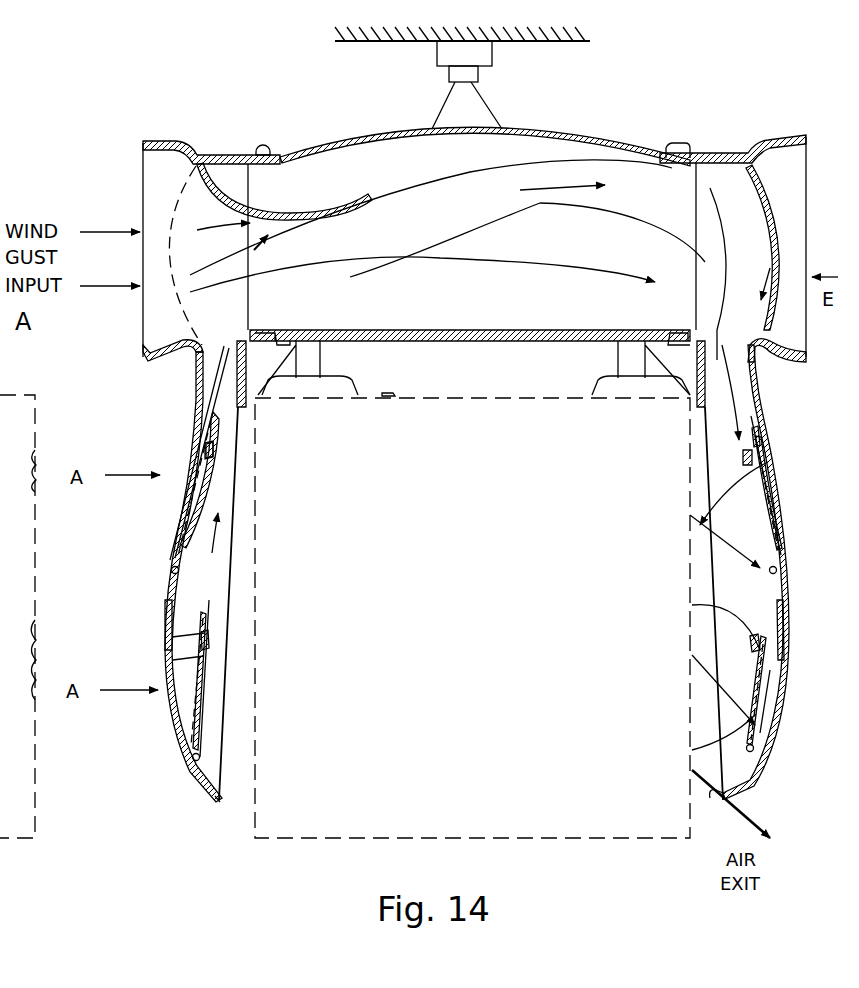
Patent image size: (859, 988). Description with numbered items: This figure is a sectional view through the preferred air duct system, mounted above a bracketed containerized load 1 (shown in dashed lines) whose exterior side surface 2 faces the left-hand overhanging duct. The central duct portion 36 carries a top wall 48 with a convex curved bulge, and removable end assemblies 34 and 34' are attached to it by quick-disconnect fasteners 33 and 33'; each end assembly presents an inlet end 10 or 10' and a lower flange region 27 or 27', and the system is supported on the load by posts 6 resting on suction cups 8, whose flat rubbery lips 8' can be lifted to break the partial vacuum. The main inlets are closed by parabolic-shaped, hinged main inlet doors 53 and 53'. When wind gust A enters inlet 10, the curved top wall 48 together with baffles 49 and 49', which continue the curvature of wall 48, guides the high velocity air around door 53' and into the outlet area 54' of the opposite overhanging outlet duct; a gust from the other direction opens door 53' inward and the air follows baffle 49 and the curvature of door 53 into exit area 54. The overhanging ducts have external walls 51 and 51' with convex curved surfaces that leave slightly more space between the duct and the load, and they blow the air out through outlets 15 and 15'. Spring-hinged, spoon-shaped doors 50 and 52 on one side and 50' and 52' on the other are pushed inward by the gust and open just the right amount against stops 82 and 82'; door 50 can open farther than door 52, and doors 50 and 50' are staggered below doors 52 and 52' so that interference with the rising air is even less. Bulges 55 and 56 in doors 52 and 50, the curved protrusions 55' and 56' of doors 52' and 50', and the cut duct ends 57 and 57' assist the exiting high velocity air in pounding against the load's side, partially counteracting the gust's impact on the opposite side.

The building structure 1 is at (498, 398).
The load side 2 is at (255, 570).
The support post 6 is at (322, 358).
The suction cup 8 is at (476, 378).
The lip 8' is at (394, 378).
The inlet end 10 is at (150, 250).
The inlet end 10' is at (779, 248).
The outlet 15 is at (252, 570).
The outlet 15' is at (690, 570).
The lower flange 27 is at (155, 341).
The lower flange 27' is at (796, 340).
The quick-disconnect fastener 33 is at (262, 126).
The quick-disconnect fastener 33' is at (678, 150).
The end assembly 34 is at (211, 137).
The end assembly 34' is at (733, 136).
The central duct portion 36 is at (505, 341).
The top wall 48 is at (385, 146).
The baffle 49 is at (263, 247).
The baffle 49' is at (678, 246).
The door 50 is at (155, 636).
The door 50' is at (804, 631).
The external wall 51 is at (170, 460).
The external wall 51' is at (789, 495).
The door 52 is at (170, 439).
The door 52' is at (784, 447).
The main inlet door 53 is at (284, 191).
The main inlet door 53' is at (795, 247).
The exit area 54 is at (177, 577).
The outlet area 54' is at (767, 572).
The bulge 55 is at (231, 484).
The curved protrusion 55' is at (746, 493).
The bulge 56 is at (239, 680).
The curved protrusion 56' is at (744, 694).
The cut end 57 is at (211, 822).
The duct end 57' is at (706, 823).
The stop 82 is at (479, 450).
The stop 82' is at (480, 632).